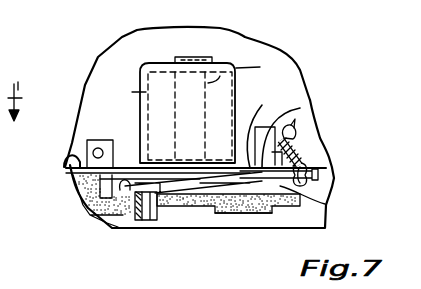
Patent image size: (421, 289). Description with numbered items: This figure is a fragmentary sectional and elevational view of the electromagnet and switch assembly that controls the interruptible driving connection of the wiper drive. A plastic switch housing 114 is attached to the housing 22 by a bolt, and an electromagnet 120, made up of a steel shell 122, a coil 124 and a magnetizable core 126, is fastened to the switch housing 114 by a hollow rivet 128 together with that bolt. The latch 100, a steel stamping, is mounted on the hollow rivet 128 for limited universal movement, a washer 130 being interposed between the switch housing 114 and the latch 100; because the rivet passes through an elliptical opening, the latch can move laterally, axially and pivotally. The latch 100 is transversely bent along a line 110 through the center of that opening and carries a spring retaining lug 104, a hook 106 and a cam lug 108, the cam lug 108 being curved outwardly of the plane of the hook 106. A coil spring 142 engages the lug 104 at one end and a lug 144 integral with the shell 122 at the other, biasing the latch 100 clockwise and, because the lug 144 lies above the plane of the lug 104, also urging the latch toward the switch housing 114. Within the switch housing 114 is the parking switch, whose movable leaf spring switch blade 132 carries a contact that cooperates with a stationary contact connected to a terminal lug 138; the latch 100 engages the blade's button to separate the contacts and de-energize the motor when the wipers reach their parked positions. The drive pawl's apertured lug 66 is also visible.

The housing 22 is at (260, 67).
The apertured lug 66 is at (125, 196).
The latch 100 is at (273, 125).
The spring retaining lug 104 is at (318, 176).
The hook 106 is at (117, 215).
The cam lug 108 is at (122, 178).
The bend line 110 is at (312, 104).
The switch housing 114 is at (205, 204).
The electromagnet 120 is at (240, 65).
The steel shell 122 is at (66, 155).
The coil 124 is at (138, 90).
The magnetizable core 126 is at (225, 65).
The hollow rivet 128 is at (268, 202).
The washer 130 is at (325, 204).
The leaf spring switch blade 132 is at (190, 193).
The terminal lug 138 is at (95, 140).
The coil spring 142 is at (305, 152).
The lug 144 is at (297, 131).